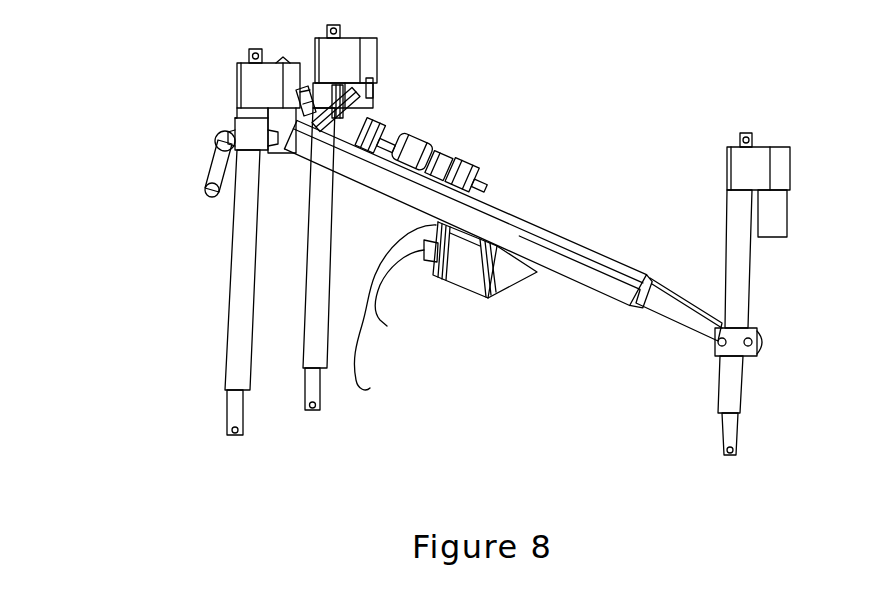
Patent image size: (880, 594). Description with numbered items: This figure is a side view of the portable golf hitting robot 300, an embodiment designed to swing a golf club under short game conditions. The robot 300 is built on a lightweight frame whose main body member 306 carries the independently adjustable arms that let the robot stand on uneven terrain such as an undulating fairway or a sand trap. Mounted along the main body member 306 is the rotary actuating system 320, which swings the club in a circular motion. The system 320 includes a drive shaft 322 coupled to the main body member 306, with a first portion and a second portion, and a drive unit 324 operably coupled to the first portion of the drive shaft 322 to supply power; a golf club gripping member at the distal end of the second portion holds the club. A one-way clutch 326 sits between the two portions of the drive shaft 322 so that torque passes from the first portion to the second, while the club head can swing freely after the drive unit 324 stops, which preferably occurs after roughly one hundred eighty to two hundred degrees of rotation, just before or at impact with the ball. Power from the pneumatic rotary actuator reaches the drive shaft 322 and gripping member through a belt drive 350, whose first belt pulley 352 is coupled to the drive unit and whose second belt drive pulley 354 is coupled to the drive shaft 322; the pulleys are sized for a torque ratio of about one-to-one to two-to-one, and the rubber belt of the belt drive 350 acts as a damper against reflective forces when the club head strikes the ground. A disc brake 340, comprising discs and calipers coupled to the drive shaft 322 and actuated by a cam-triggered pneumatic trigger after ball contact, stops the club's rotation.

The portable golf hitting robot 300 is at (419, 240).
The main body member 306 is at (567, 233).
The rotary actuating system 320 is at (481, 182).
The drive shaft 322 is at (412, 152).
The drive unit 324 is at (450, 283).
The one-way clutch 326 is at (439, 166).
The disc brake 340 is at (371, 104).
The belt drive 350 is at (420, 307).
The first belt pulley 352 is at (406, 316).
The second belt drive pulley 354 is at (468, 178).